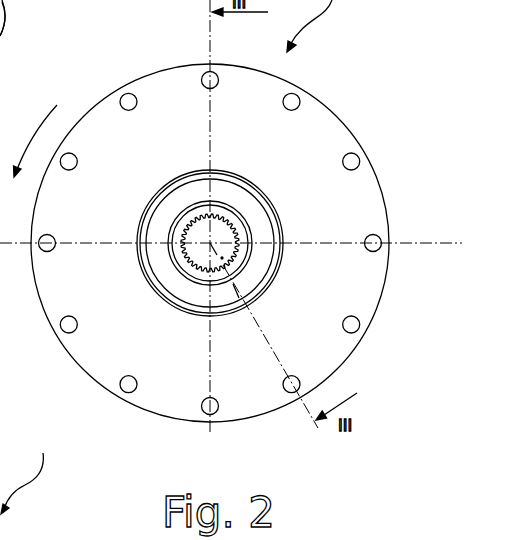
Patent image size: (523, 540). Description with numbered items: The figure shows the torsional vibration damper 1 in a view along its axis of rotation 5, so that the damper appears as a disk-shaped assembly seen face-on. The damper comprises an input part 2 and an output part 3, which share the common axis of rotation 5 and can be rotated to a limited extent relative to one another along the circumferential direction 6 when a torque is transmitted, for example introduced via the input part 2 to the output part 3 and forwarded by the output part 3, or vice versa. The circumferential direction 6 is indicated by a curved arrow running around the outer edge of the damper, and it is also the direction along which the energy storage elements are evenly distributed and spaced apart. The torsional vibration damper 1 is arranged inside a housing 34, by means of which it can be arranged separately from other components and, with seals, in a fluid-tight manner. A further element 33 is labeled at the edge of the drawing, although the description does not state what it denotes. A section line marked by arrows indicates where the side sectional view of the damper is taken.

The torsional vibration damper 1 is at (24, 480).
The input part 2 is at (315, 125).
The output part 3 is at (273, 283).
The axis of rotation 5 is at (213, 247).
The circumferential direction 6 is at (35, 141).
The housing part 33 is at (11, 34).
The housing 34 is at (357, 192).